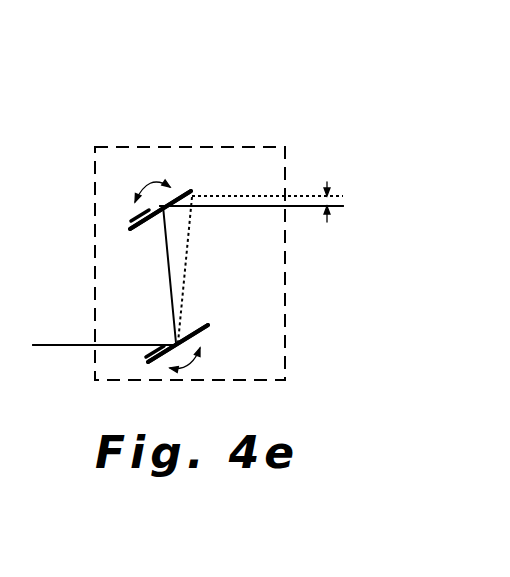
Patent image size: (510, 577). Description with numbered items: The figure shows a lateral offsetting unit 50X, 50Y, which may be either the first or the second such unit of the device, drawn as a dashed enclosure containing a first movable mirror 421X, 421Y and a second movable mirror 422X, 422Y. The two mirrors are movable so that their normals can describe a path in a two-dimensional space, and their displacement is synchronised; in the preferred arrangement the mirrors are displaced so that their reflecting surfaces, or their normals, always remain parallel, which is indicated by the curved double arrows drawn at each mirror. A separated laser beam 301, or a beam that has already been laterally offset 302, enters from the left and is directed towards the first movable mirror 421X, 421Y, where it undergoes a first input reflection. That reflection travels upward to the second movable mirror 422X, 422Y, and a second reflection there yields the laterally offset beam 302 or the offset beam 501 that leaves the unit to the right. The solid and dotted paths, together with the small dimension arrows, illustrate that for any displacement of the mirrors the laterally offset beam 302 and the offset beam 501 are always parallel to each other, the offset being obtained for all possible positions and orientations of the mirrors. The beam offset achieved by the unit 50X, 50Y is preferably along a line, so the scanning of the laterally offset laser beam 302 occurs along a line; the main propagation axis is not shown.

The first lateral offsetting unit 50X is at (188, 147).
The second lateral offsetting unit 50Y is at (190, 236).
The second movable mirror 422X is at (186, 195).
The second movable mirror 422Y is at (256, 169).
The first movable mirror 421X is at (203, 333).
The first movable mirror 421Y is at (261, 333).
The separated laser beam 301 is at (65, 345).
The laterally offset beam 302 is at (300, 162).
The offset beam 501 is at (286, 201).